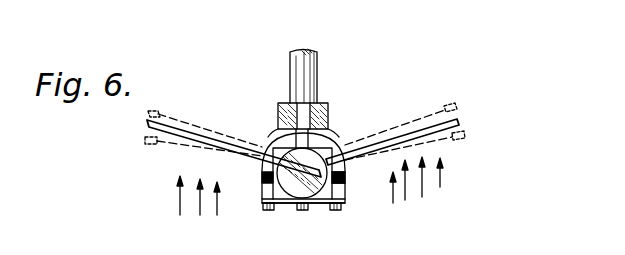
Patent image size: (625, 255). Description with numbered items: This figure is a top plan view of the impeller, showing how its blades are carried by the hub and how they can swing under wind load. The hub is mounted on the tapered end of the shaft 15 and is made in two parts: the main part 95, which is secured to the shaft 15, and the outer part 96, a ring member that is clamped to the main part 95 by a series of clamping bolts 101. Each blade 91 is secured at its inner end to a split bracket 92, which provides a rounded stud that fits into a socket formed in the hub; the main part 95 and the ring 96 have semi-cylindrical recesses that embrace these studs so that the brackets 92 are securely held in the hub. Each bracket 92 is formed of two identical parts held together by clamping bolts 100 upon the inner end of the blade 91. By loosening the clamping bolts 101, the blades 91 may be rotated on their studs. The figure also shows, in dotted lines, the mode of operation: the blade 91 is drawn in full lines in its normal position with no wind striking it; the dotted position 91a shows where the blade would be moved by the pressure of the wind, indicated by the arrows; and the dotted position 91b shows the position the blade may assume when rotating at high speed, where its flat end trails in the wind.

The shaft 15 is at (300, 70).
The main part of the hub 95 is at (278, 124).
The split bracket 92 is at (334, 150).
The ring member 96 is at (346, 198).
The clamping bolts 100 is at (268, 200).
The clamping bolts 101 is at (336, 211).
The blade 91 is at (165, 130).
The blade in wind-pressure position 91a is at (150, 117).
The blade in high-speed trailing position 91b is at (178, 143).